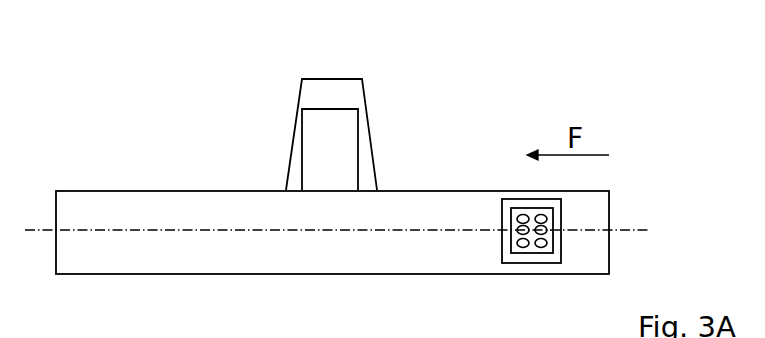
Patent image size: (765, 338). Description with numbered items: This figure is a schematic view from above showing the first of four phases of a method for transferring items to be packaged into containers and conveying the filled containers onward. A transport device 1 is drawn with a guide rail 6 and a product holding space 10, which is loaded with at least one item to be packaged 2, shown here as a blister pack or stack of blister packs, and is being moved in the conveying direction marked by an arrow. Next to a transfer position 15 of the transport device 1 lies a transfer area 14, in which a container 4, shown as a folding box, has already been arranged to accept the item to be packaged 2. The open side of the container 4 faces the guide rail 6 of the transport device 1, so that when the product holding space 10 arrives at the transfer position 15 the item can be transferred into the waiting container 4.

The transport device 1 is at (153, 126).
The item to be packaged 2 is at (551, 222).
The container 4 is at (359, 155).
The guide rail 6 is at (105, 191).
The product holding space 10 is at (512, 256).
The transfer area 14 is at (317, 77).
The transfer position 15 is at (360, 238).